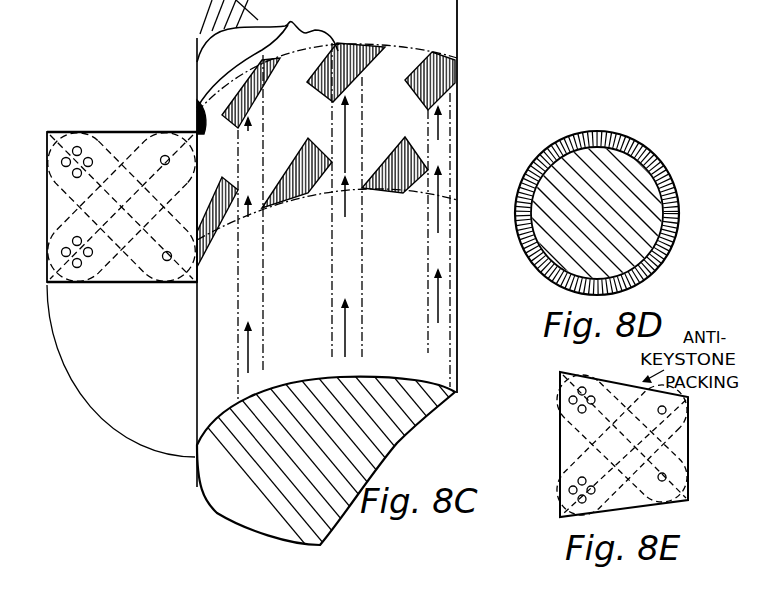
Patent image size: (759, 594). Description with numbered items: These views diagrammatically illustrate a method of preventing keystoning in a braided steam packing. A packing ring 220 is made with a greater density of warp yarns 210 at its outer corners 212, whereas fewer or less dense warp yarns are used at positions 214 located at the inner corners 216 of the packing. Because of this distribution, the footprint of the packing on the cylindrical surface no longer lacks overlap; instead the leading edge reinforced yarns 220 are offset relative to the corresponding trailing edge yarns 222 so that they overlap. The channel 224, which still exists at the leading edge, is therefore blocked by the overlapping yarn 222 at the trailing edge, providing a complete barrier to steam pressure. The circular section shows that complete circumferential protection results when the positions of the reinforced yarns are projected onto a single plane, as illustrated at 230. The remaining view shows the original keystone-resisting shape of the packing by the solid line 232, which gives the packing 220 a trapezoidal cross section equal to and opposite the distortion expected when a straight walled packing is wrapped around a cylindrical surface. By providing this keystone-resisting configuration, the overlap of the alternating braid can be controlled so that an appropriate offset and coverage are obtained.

In FIG. 8C, the warp yarns 210 is at (50, 139).
In FIG. 8C, the outer corners 212 is at (49, 131).
In FIG. 8C, the positions 214 is at (167, 156).
In FIG. 8C, the inner corners 216 is at (119, 132).
In FIG. 8C, the packing ring 220 is at (137, 122).
In FIG. 8E, the packing ring 220 is at (577, 370).
In FIG. 8C, the trailing edge yarns 222 is at (289, 28).
In FIG. 8C, the channel 224 is at (248, 290).
In FIG. 8D, the projection of reinforced yarn positions 230 is at (617, 131).
In FIG. 8E, the solid line 232 is at (550, 426).